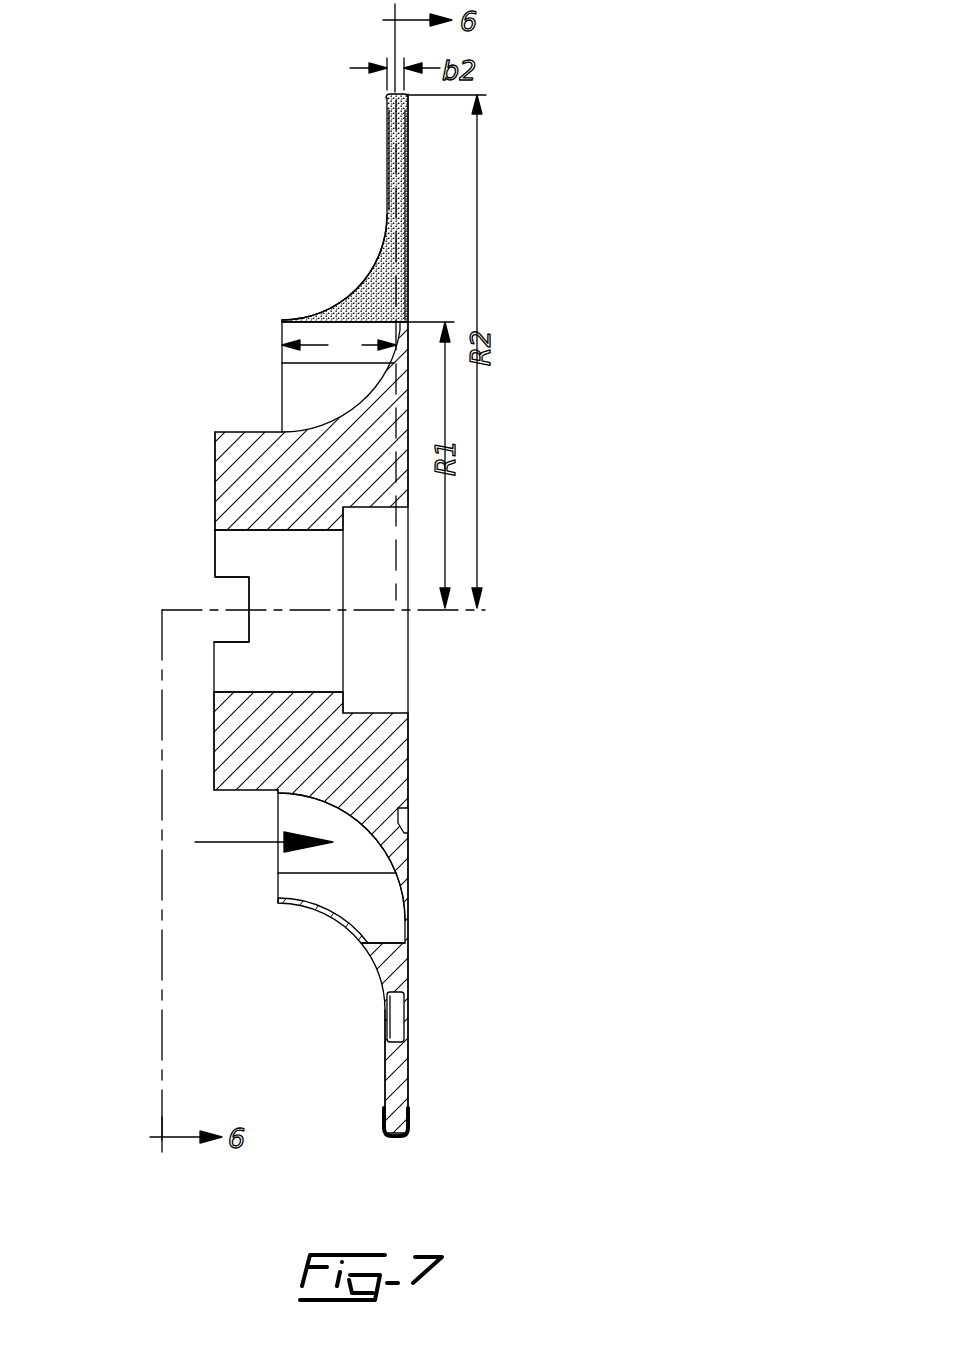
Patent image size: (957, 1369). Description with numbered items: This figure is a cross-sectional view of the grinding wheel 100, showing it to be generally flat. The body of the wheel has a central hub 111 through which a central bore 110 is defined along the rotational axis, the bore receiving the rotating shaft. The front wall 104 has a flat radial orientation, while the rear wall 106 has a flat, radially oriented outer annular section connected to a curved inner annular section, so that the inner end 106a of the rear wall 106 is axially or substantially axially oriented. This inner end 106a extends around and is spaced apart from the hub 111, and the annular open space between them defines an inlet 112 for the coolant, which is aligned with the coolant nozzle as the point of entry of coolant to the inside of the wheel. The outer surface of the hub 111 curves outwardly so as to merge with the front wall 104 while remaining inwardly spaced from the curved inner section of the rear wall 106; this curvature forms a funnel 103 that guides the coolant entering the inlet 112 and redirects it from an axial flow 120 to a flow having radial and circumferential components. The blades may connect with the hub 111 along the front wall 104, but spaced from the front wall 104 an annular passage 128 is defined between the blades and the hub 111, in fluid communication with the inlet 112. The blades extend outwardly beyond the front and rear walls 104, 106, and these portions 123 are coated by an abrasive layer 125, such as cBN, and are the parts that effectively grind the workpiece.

The grinding wheel 100 is at (148, 97).
The funnel 103 is at (347, 904).
The front wall 104 is at (411, 751).
The rear wall 106 is at (382, 154).
The inner end of the rear wall 106a is at (283, 906).
The central bore 110 is at (262, 557).
The hub 111 is at (238, 473).
The inlet 112 is at (293, 379).
The axial flow 120 is at (236, 845).
The portions of the blades 123 is at (398, 967).
The abrasive layer 125 is at (395, 1140).
The annular passage 128 is at (314, 332).